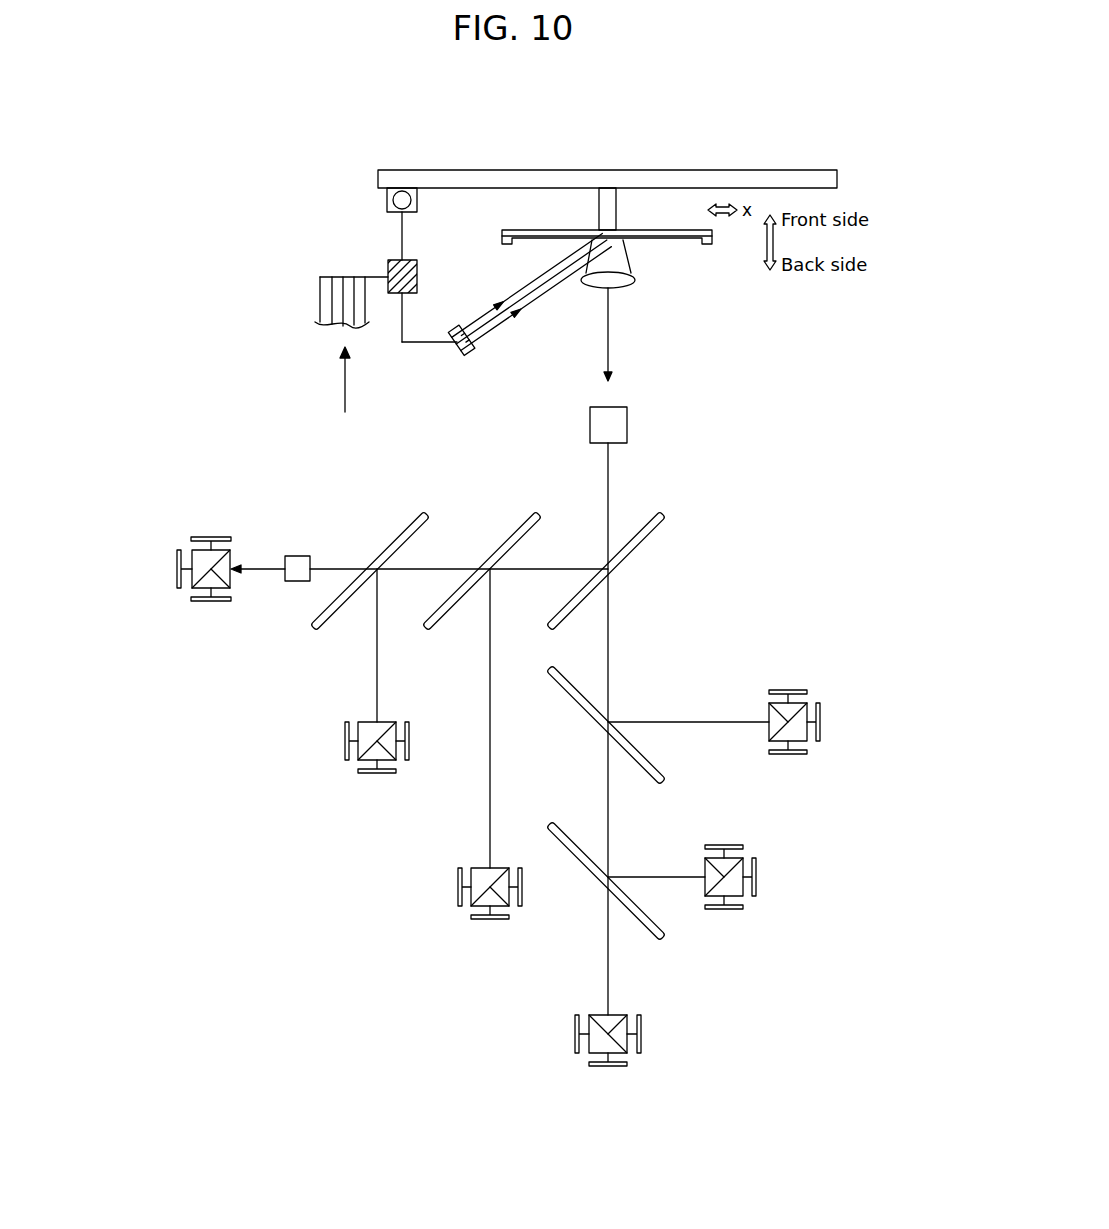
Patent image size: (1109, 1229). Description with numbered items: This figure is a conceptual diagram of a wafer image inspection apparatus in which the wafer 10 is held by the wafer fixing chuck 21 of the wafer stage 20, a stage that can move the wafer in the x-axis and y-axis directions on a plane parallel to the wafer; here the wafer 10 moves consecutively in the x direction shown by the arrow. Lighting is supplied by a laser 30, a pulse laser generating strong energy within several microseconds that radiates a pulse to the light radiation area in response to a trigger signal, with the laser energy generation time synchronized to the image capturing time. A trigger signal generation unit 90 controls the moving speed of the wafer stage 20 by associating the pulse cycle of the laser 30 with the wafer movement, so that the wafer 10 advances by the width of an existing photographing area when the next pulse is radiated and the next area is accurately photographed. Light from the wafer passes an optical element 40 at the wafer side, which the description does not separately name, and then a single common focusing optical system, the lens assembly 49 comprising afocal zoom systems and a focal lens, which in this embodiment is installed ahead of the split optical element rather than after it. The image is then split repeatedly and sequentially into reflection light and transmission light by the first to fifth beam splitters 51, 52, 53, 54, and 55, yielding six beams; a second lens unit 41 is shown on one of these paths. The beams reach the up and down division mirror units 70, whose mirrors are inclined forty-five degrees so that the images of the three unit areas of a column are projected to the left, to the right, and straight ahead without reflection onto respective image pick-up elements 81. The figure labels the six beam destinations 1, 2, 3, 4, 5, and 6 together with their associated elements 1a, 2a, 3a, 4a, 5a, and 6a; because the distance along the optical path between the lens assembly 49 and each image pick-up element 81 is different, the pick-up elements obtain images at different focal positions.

The wafer 10 is at (686, 245).
The wafer stage 20 is at (537, 180).
The wafer fixing chuck 21 is at (599, 210).
The laser 30 is at (471, 352).
The imaging lens 40 is at (620, 292).
The second lens unit 41 is at (292, 556).
The lens assembly 49 is at (627, 420).
The first beam splitter 51 is at (630, 541).
The second beam splitter 52 is at (505, 541).
The third beam splitter 53 is at (577, 691).
The fourth beam splitter 54 is at (392, 541).
The fifth beam splitter 55 is at (577, 846).
The up and down division mirror unit 70 is at (294, 644).
The image pick-up element 81 is at (428, 816).
The trigger signal generation unit 90 is at (388, 268).
The first camera unit 1 is at (211, 569).
The first camera 1a is at (218, 570).
The second camera unit 2 is at (377, 741).
The second camera 2a is at (383, 753).
The third camera unit 3 is at (490, 887).
The third camera 3a is at (500, 901).
The fourth camera unit 4 is at (608, 1034).
The fourth camera 4a is at (608, 1026).
The fifth camera unit 5 is at (724, 878).
The fifth camera 5a is at (741, 870).
The sixth camera unit 6 is at (788, 722).
The sixth camera 6a is at (804, 715).